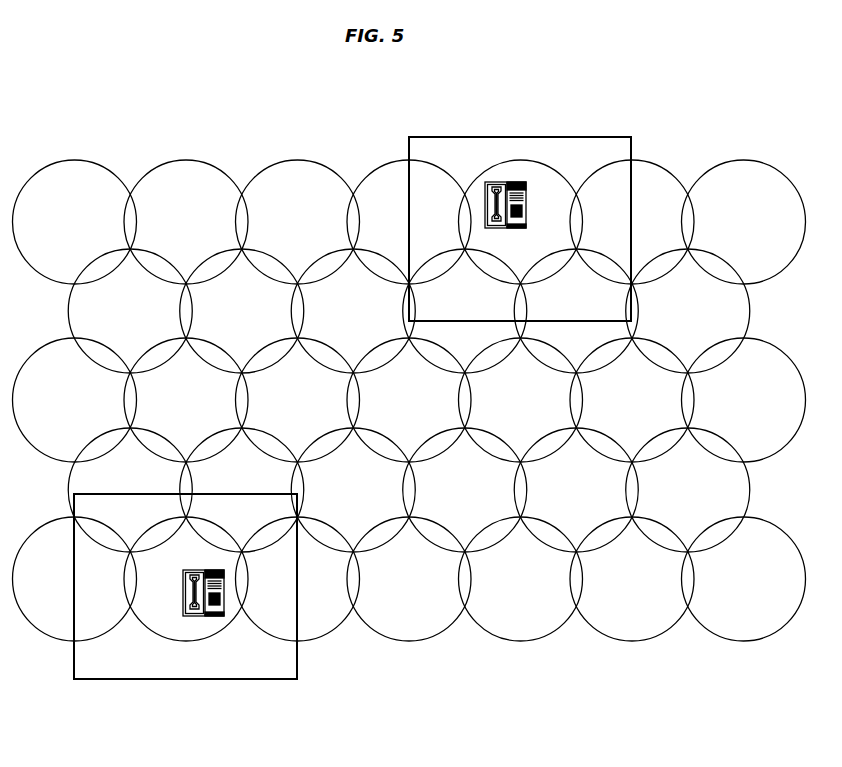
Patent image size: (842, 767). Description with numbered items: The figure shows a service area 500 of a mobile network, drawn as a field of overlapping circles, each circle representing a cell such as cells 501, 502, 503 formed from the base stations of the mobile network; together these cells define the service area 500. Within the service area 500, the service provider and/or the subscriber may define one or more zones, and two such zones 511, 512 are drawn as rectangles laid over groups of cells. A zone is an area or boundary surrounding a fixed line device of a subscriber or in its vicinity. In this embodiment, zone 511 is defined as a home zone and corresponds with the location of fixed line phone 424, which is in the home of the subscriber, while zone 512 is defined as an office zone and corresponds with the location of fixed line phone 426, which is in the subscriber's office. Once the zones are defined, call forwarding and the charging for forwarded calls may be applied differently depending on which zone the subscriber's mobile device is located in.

The service area 500 is at (214, 52).
The cell 501 is at (82, 160).
The cell 502 is at (194, 160).
The cell 503 is at (310, 160).
The home zone 511 is at (577, 137).
The office zone 512 is at (184, 679).
The fixed line phone 424 is at (500, 182).
The fixed line phone 426 is at (213, 616).